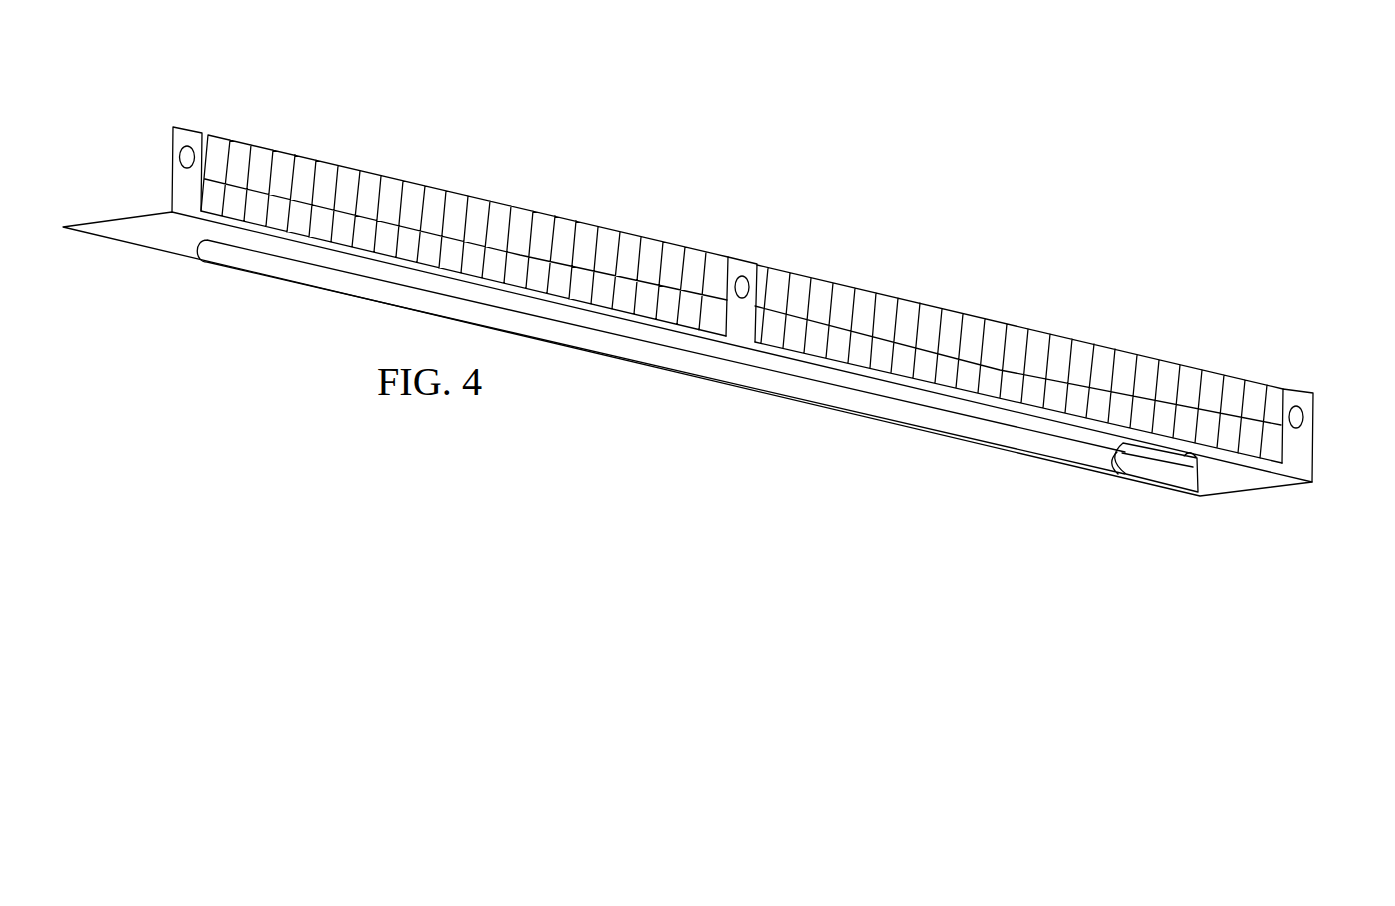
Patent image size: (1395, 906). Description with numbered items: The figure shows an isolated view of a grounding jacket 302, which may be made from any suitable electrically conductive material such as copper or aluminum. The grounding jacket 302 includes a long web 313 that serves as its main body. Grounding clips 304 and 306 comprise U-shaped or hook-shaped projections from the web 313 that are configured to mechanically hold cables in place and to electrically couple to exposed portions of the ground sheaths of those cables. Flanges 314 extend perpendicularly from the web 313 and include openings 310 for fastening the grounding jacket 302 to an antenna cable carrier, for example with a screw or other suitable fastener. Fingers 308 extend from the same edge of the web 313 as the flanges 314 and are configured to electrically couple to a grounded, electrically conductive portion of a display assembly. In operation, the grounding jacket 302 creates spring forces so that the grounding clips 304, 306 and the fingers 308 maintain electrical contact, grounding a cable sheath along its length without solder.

The grounding jacket 302 is at (865, 101).
The grounding clip 304 is at (1165, 480).
The grounding clip 306 is at (835, 410).
The fingers 308 is at (487, 198).
The openings 310 is at (182, 157).
The web 313 is at (1258, 491).
The flanges 314 is at (195, 130).